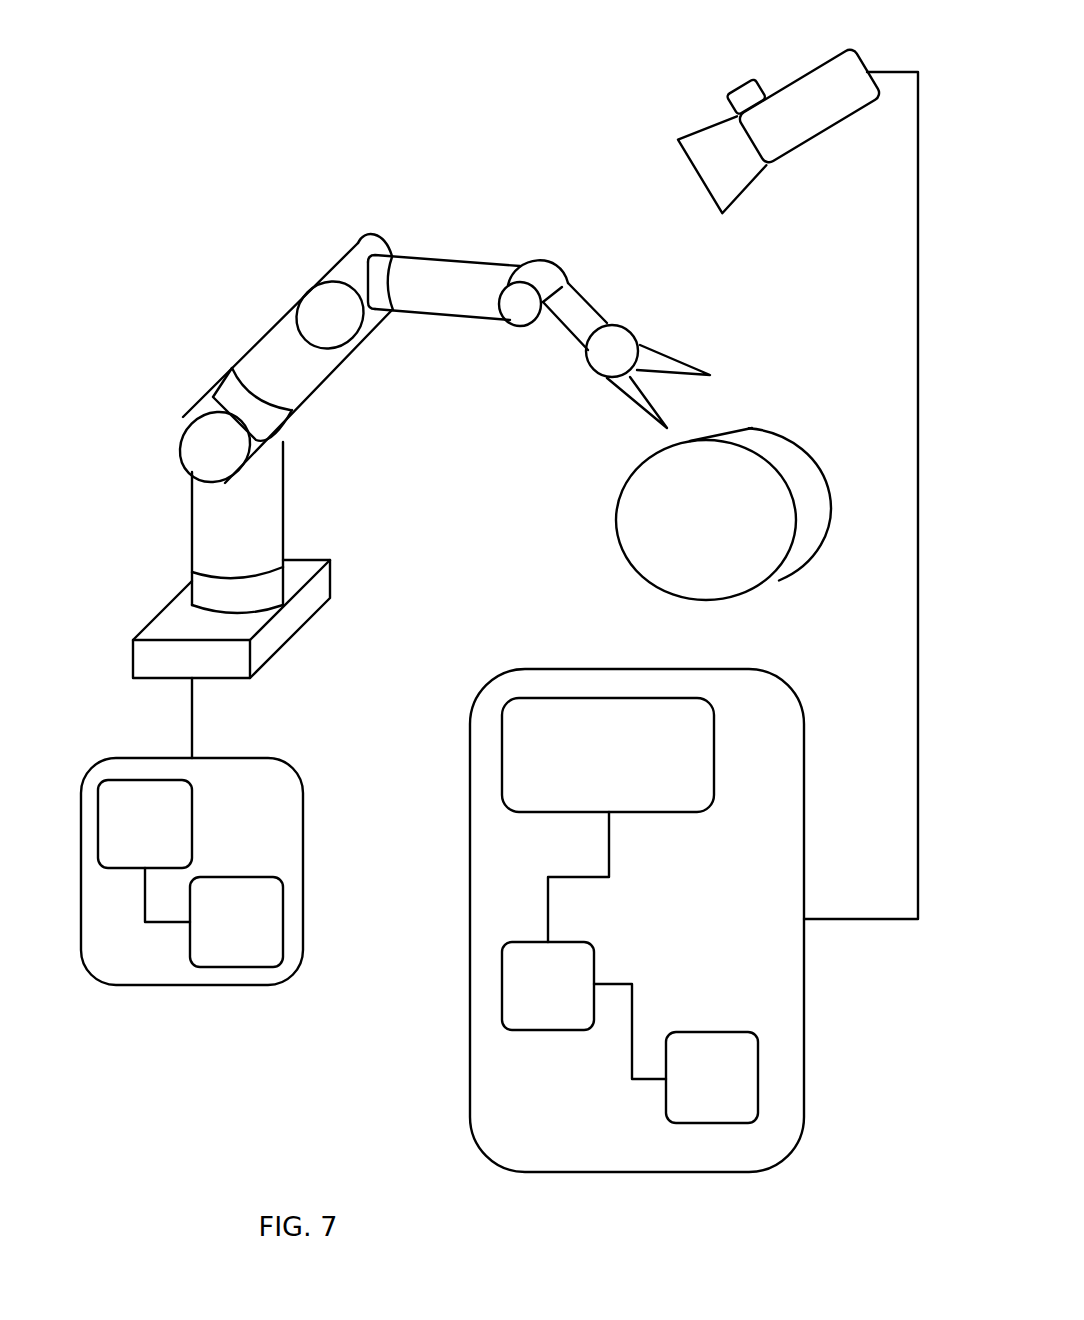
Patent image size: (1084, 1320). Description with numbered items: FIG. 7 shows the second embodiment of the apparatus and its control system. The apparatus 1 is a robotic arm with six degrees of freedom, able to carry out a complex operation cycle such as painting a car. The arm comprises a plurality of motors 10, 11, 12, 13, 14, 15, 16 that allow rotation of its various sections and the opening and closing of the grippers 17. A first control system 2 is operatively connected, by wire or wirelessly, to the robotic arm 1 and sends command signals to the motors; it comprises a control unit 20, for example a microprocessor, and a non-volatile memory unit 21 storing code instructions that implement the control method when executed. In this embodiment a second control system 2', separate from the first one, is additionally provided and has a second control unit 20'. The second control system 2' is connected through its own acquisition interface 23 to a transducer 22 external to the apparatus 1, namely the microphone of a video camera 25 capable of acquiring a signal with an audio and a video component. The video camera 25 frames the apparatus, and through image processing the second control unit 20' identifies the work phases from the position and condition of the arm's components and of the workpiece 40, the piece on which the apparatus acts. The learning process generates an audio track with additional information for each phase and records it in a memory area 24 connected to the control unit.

The apparatus 1 is at (182, 330).
The motor 10 is at (208, 593).
The motor 11 is at (213, 452).
The motor 12 is at (243, 403).
The motor 13 is at (317, 305).
The motor 14 is at (383, 268).
The motor 15 is at (543, 268).
The motor 16 is at (612, 350).
The grippers 17 is at (690, 373).
The first control system 2 is at (192, 892).
The control unit 20 is at (145, 824).
The non-volatile memory unit 21 is at (236, 922).
The second control system 2' is at (599, 920).
The second control unit 20' is at (548, 986).
The acquisition interface 23 is at (608, 755).
The memory area 24 is at (712, 1077).
The transducer 22 is at (738, 82).
The video camera 25 is at (820, 75).
The workpiece 40 is at (670, 498).